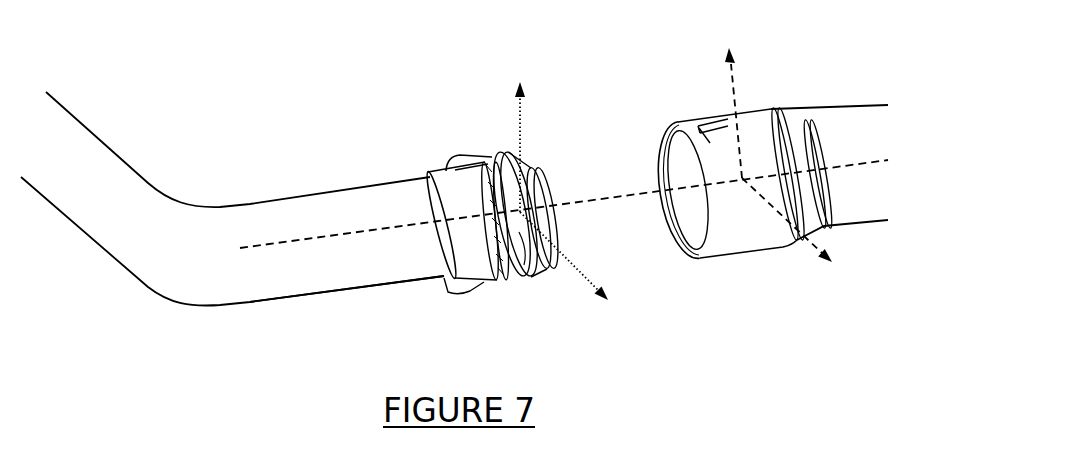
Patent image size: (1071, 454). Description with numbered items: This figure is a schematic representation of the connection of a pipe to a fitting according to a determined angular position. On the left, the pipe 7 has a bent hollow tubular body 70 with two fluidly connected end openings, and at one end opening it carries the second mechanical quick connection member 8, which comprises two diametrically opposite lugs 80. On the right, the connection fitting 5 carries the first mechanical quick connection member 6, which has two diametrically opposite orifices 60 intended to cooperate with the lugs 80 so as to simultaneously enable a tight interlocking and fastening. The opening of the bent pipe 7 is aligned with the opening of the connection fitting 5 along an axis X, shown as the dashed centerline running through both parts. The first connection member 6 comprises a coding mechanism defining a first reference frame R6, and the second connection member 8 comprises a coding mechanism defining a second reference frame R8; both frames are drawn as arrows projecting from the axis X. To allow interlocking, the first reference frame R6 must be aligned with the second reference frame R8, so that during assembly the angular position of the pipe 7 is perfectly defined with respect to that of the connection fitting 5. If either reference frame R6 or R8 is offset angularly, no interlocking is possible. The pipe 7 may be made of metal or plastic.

The connection fitting 5 is at (785, 80).
The first mechanical quick connection member 6 is at (671, 106).
The orifices 60 is at (698, 124).
The pipe 7 is at (222, 149).
The bent hollow tubular body 70 is at (285, 290).
The second mechanical quick connection member 8 is at (465, 142).
The lugs 80 is at (447, 162).
The second reference frame R8 is at (565, 257).
The first reference frame R6 is at (805, 233).
The axis X is at (588, 192).